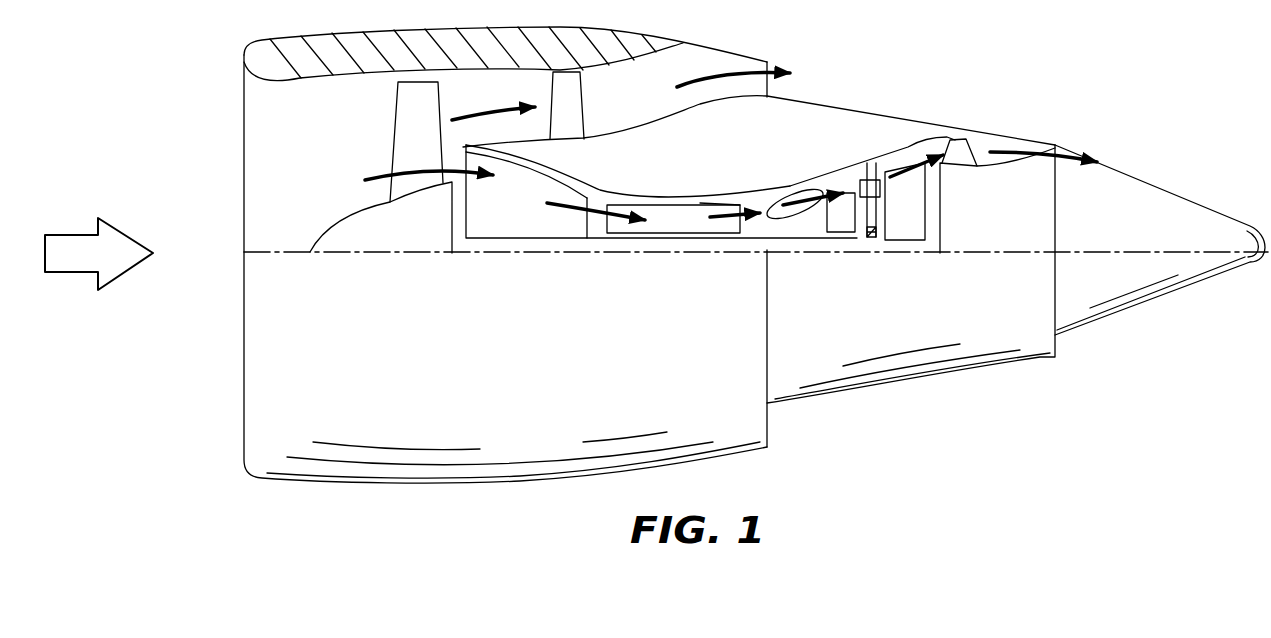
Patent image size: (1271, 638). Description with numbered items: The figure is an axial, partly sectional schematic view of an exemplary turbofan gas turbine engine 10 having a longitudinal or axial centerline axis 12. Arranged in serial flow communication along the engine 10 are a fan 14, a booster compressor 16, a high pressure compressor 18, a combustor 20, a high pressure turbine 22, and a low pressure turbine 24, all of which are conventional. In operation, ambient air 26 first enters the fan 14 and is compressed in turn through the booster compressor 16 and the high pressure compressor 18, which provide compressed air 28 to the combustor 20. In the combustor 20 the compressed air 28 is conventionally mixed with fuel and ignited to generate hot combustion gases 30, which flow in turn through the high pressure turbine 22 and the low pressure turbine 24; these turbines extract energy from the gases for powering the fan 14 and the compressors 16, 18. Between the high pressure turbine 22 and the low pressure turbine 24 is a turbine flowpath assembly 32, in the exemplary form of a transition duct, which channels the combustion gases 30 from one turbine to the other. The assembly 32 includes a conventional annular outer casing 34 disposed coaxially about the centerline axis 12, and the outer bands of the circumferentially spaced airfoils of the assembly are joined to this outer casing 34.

The turbofan gas turbine engine 10 is at (950, 120).
The longitudinal centerline axis 12 is at (1183, 250).
The fan 14 is at (396, 130).
The booster compressor 16 is at (531, 221).
The high pressure compressor 18 is at (695, 224).
The combustor 20 is at (793, 191).
The high pressure turbine 22 is at (867, 173).
The low pressure turbine 24 is at (907, 150).
The ambient air 26 is at (63, 232).
The compressed air 28 is at (733, 205).
The hot combustion gases 30 is at (836, 196).
The turbine flowpath assembly 32 is at (877, 185).
The annular outer casing 34 is at (828, 175).